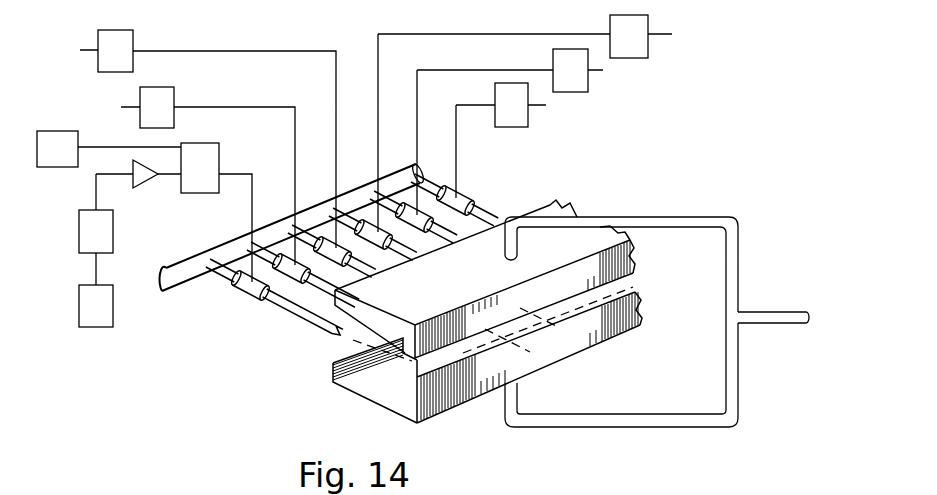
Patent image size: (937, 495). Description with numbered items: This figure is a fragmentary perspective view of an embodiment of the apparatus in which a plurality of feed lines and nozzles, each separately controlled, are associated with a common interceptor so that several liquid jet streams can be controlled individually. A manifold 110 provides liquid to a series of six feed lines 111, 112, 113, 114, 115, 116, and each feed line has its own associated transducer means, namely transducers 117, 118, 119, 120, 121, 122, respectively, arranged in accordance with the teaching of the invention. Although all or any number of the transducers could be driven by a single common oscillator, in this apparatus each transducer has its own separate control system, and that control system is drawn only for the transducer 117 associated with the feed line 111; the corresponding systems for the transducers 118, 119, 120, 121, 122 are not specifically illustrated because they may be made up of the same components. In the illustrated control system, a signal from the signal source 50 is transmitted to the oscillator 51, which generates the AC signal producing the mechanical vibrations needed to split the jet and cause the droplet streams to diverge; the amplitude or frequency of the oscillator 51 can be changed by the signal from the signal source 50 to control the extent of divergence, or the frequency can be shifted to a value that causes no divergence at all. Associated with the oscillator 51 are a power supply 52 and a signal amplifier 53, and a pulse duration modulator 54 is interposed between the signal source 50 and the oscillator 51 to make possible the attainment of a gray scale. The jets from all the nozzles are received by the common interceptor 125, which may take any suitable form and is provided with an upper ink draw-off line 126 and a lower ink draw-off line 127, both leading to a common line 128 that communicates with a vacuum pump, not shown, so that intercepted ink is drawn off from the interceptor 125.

The signal source 50 is at (87, 318).
The oscillator 51 is at (107, 63).
The power supply 52 is at (48, 161).
The signal amplifier 53 is at (149, 184).
The pulse duration modulator 54 is at (87, 244).
The manifold 110 is at (181, 281).
The feed line 111 is at (262, 304).
The feed line 112 is at (318, 285).
The feed line 113 is at (345, 278).
The feed line 114 is at (482, 222).
The feed line 115 is at (458, 205).
The feed line 116 is at (495, 228).
The transducer means 117 is at (246, 279).
The transducer means 118 is at (288, 262).
The transducer means 119 is at (328, 245).
The transducer means 120 is at (370, 228).
The transducer means 121 is at (410, 210).
The transducer means 122 is at (450, 193).
The common interceptor 125 is at (598, 247).
The upper ink draw-off line 126 is at (656, 217).
The lower ink draw-off line 127 is at (656, 415).
The common line 128 is at (777, 313).